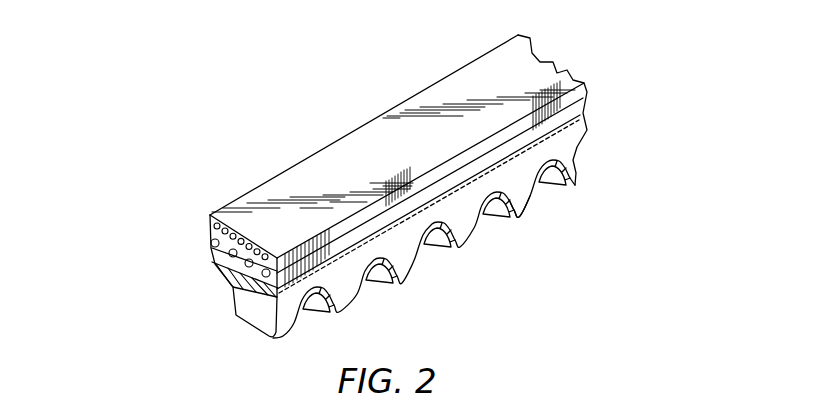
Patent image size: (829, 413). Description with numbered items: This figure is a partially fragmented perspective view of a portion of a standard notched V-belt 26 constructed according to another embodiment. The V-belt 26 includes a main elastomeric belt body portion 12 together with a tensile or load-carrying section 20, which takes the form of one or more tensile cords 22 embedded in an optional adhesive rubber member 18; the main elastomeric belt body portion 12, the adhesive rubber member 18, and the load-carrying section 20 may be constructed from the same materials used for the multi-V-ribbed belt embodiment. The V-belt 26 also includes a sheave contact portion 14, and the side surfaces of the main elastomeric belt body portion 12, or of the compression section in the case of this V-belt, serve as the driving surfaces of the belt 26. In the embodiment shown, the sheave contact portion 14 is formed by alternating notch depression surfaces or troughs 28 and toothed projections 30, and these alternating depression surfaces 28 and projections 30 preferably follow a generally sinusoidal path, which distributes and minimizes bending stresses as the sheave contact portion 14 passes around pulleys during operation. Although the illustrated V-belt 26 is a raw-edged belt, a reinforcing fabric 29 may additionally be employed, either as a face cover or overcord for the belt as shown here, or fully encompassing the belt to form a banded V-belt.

The main elastomeric belt body portion 12 is at (213, 264).
The sheave contact portion 14 is at (408, 281).
The adhesive rubber member 18 is at (218, 212).
The load-carrying section 20 is at (200, 234).
The tensile cords 22 is at (228, 296).
The V-belt 26 is at (292, 140).
The notch depression surfaces 28 is at (486, 210).
The reinforcing fabric 29 is at (210, 230).
The toothed projections 30 is at (520, 200).